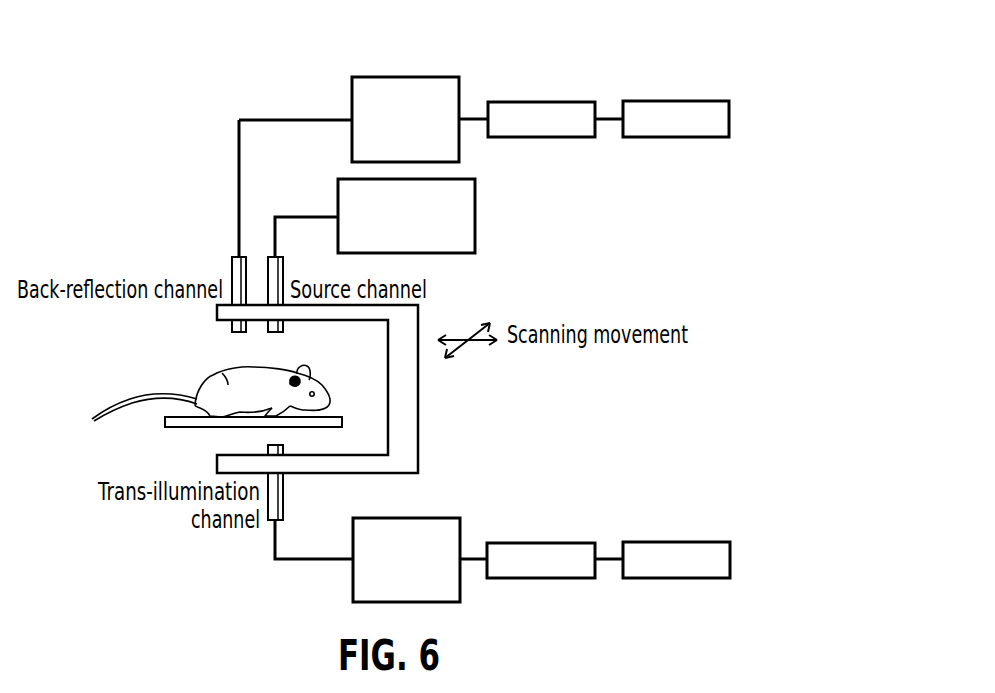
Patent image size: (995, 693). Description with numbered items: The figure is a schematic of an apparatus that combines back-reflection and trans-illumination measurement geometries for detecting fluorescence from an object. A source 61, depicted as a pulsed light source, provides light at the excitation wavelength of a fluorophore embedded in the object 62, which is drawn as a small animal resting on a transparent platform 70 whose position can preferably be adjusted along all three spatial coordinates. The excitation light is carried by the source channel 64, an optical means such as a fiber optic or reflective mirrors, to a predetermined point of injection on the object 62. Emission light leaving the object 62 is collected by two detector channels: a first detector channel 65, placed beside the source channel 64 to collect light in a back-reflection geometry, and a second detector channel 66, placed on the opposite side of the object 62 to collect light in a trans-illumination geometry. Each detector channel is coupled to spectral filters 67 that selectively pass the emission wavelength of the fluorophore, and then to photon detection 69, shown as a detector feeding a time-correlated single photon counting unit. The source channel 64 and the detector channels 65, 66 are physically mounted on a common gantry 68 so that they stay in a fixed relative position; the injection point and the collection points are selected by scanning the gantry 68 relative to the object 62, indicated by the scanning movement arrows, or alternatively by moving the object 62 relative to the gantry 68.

The source 61 is at (475, 216).
The object 62 is at (222, 373).
The source channel 64 is at (283, 267).
The first detector channel 65 is at (232, 264).
The second detector channel 66 is at (270, 522).
The spectral filters 67 is at (433, 77).
The common gantry 68 is at (318, 363).
The photon detection 69 is at (567, 102).
The transparent platform 70 is at (177, 428).